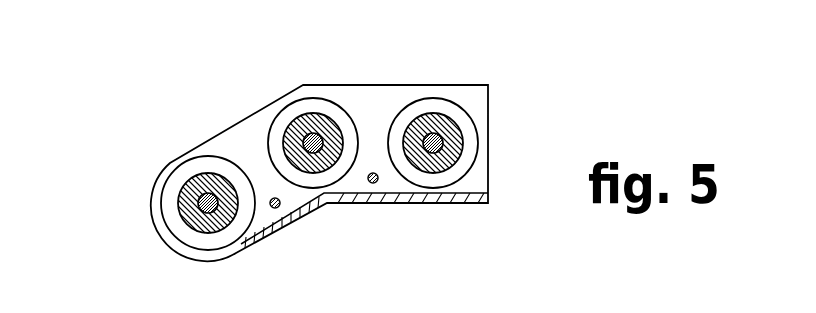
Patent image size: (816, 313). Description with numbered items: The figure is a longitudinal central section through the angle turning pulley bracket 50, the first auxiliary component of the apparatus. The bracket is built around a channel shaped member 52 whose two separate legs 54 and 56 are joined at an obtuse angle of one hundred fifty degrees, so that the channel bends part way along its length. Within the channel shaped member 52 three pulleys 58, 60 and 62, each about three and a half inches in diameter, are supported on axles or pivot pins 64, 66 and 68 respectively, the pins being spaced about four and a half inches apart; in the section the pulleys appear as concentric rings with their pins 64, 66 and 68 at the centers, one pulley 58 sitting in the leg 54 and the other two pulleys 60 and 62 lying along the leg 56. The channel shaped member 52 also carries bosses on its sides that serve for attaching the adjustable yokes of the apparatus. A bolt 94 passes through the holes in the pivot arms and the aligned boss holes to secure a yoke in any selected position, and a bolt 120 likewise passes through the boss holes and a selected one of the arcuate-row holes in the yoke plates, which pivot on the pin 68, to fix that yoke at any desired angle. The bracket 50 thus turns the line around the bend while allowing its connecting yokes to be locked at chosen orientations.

The angle turning pulley bracket 50 is at (249, 109).
The channel shaped member 52 is at (403, 195).
The leg 54 is at (190, 156).
The leg 56 is at (405, 98).
The pulley 58 is at (172, 198).
The pulley 60 is at (315, 104).
The pulley 62 is at (456, 110).
The axle or pivot pin 64 is at (207, 216).
The axle or pivot pin 66 is at (319, 152).
The axle or pivot pin 68 is at (447, 158).
The bolt 94 is at (275, 208).
The bolt 120 is at (373, 183).